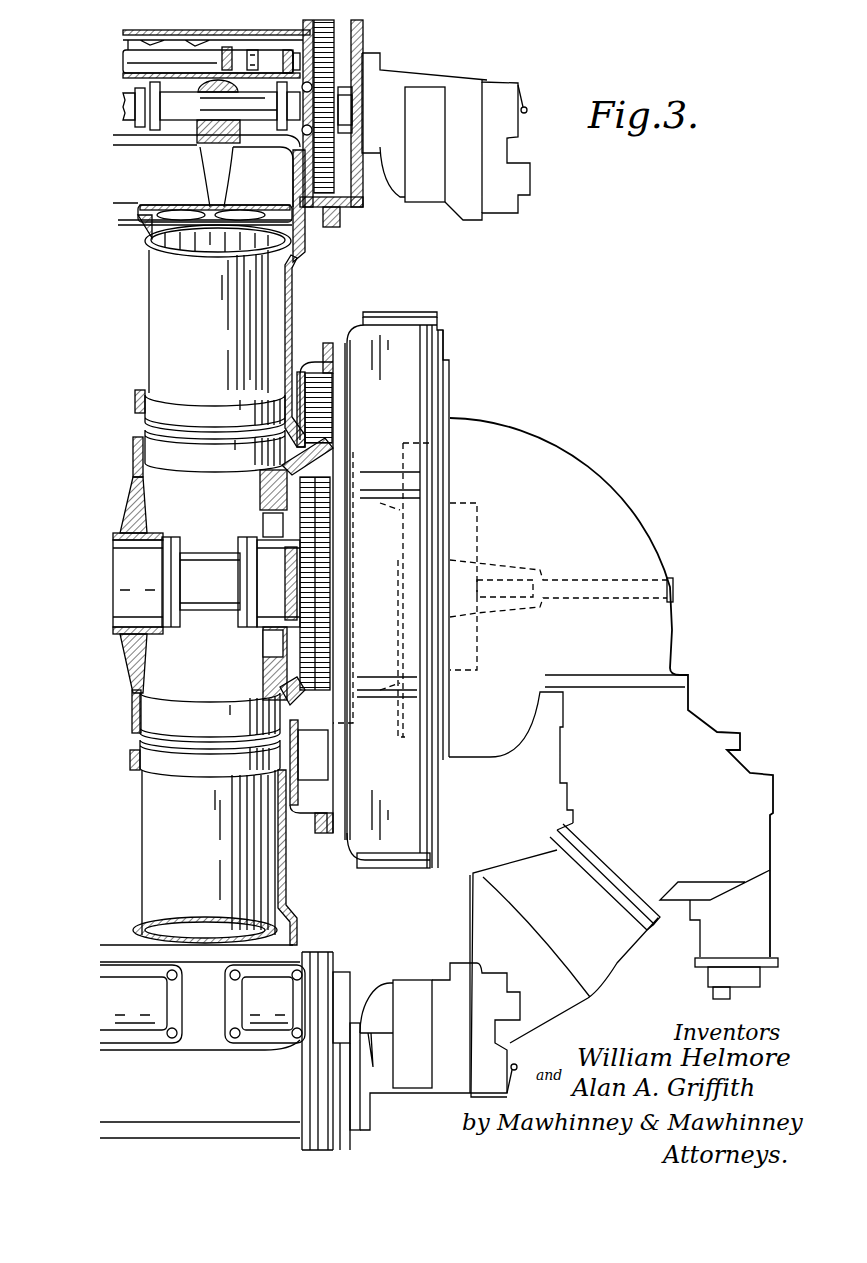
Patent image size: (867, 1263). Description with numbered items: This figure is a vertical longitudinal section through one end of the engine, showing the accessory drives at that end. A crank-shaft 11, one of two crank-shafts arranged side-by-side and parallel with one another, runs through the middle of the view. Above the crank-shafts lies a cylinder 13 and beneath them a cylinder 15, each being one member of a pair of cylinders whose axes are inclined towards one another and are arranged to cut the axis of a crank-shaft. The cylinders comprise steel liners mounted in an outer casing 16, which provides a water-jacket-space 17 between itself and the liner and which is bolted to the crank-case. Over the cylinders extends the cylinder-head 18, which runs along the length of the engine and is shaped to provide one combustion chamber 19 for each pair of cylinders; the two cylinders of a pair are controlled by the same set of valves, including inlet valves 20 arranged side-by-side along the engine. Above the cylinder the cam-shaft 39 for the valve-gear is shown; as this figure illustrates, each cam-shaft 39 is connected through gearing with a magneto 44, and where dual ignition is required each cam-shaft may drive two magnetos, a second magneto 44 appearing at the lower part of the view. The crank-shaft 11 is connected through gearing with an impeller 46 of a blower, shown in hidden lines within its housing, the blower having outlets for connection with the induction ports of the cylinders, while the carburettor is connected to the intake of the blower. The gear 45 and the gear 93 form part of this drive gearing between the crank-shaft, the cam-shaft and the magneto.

The crank-shaft 11 is at (200, 563).
The cylinder 13 is at (163, 347).
The cylinder 15 is at (162, 822).
The outer casing 16 is at (293, 290).
The water-jacket-space 17 is at (280, 323).
The cylinder-head 18 is at (165, 215).
The combustion chamber 19 is at (174, 212).
The inlet valve 20 is at (222, 214).
The cam-shaft 39 is at (183, 108).
The magneto 44 is at (458, 93).
The gear 45 is at (330, 550).
The impeller 46 is at (407, 463).
The gear 93 is at (333, 57).